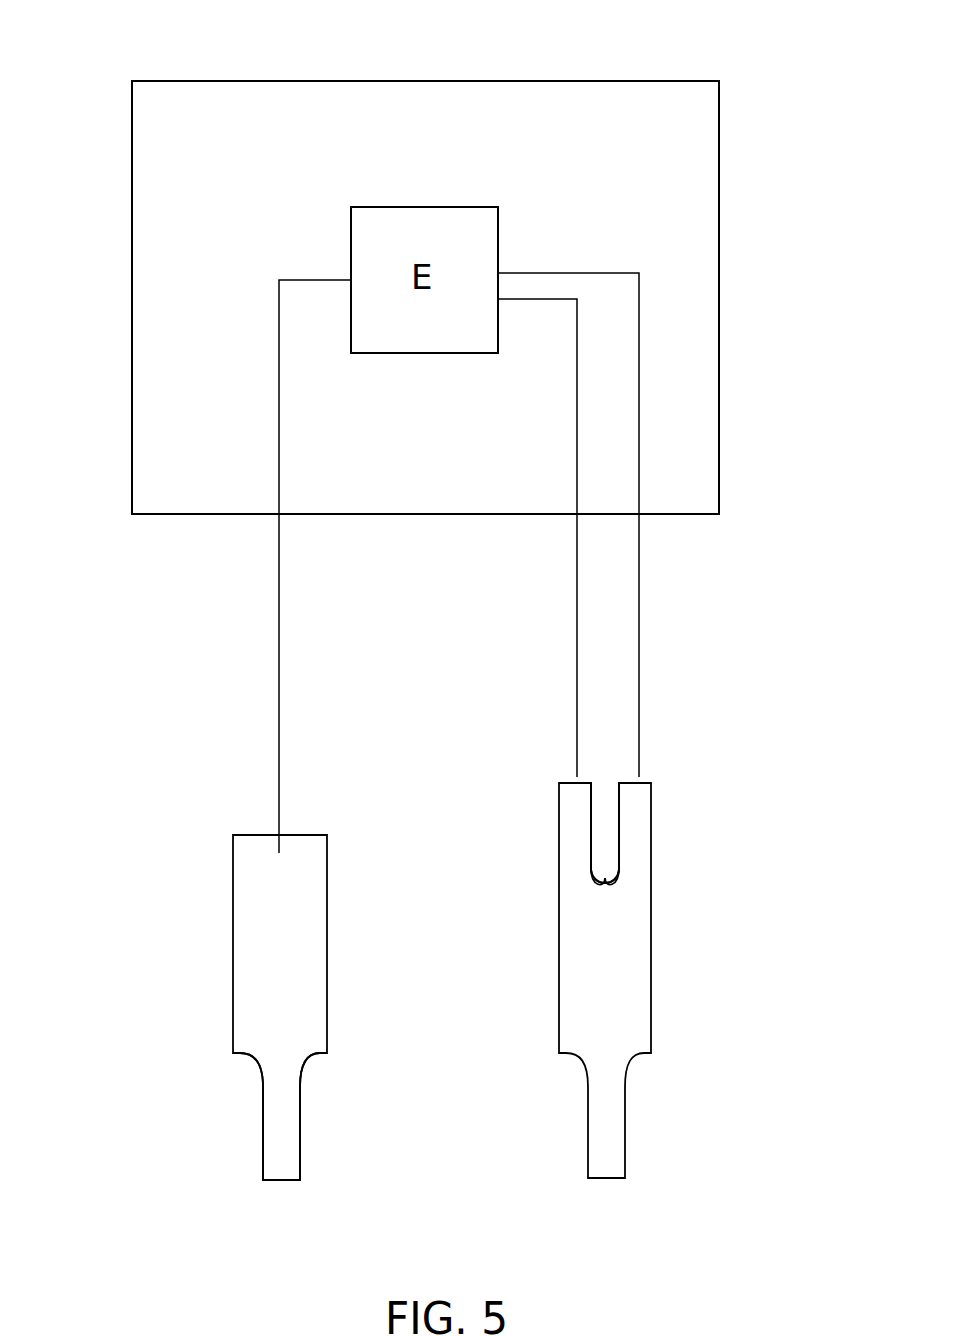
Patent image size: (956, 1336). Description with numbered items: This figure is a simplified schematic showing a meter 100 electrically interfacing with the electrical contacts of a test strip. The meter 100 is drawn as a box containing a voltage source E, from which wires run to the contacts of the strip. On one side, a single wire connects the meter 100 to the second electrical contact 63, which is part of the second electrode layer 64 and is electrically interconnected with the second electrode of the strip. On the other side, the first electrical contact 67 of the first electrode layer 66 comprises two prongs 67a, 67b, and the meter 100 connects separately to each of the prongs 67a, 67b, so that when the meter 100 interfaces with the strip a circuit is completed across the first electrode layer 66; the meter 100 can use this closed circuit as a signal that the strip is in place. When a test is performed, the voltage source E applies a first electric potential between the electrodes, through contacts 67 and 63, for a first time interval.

The meter 100 is at (617, 81).
The second electrical contact 63 is at (265, 861).
The second electrode layer 64 is at (260, 1030).
The first electrode layer 66 is at (610, 1020).
The first electrical contact 67 is at (670, 762).
The first prong 67a is at (577, 808).
The second prong 67b is at (633, 809).